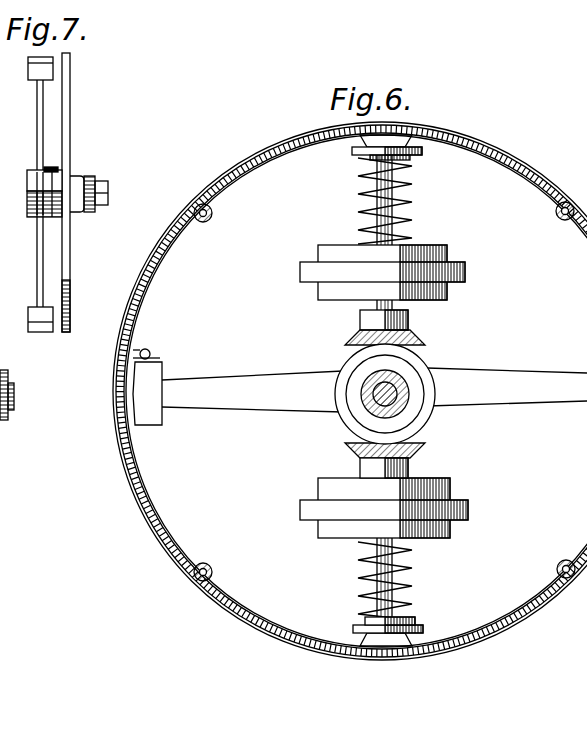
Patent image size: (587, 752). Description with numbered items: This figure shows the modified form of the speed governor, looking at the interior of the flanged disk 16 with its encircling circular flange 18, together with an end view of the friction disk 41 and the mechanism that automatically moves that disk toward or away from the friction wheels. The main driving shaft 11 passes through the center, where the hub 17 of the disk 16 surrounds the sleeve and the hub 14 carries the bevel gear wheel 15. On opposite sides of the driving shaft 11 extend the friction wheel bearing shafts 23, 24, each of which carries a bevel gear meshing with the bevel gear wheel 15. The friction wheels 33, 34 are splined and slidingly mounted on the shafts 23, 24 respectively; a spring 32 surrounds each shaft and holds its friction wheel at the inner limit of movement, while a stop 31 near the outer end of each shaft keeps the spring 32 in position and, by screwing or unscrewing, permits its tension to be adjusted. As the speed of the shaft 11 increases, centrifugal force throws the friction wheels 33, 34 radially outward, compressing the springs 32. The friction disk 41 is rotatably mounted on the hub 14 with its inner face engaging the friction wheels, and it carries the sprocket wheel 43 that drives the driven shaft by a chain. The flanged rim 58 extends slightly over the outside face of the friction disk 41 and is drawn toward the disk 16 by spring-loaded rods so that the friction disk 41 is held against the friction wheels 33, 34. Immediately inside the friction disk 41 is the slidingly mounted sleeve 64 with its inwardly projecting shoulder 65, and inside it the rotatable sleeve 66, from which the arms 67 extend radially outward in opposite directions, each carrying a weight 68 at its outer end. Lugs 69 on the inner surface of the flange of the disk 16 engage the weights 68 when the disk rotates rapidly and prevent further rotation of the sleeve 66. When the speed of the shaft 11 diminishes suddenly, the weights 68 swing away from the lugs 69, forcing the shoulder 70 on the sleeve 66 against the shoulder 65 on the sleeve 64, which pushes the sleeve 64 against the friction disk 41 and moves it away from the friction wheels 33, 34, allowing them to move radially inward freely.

In FIG. 7, the main driving shaft 11 is at (108, 191).
In FIG. 6, the main driving shaft 11 is at (367, 406).
In FIG. 7, the hub 14 is at (90, 212).
In FIG. 6, the hub 14 is at (412, 395).
In FIG. 6, the bevel gear wheel 15 is at (420, 427).
In FIG. 6, the disk 16 is at (350, 391).
In FIG. 6, the hub 17 is at (346, 394).
In FIG. 6, the circular flange 18 is at (118, 446).
In FIG. 6, the friction wheel bearing shaft 23 is at (398, 211).
In FIG. 6, the friction wheel bearing shaft 24 is at (398, 557).
In FIG. 6, the stop 31 is at (355, 156).
In FIG. 6, the spring 32 is at (365, 178).
In FIG. 6, the friction wheel 33 is at (318, 272).
In FIG. 6, the friction wheel 34 is at (318, 513).
In FIG. 7, the friction disk 41 is at (71, 290).
In FIG. 7, the sprocket wheel 43 is at (0, 457).
In FIG. 6, the flanged rim 58 is at (140, 483).
In FIG. 7, the sleeve 64 is at (57, 217).
In FIG. 7, the shoulder 65 is at (50, 181).
In FIG. 7, the sleeve 66 is at (42, 200).
In FIG. 7, the arm 67 is at (40, 143).
In FIG. 6, the arm 67 is at (374, 390).
In FIG. 7, the weight 68 is at (33, 70).
In FIG. 6, the weight 68 is at (147, 393).
In FIG. 6, the lug 69 is at (151, 353).
In FIG. 7, the shoulder 70 is at (48, 200).